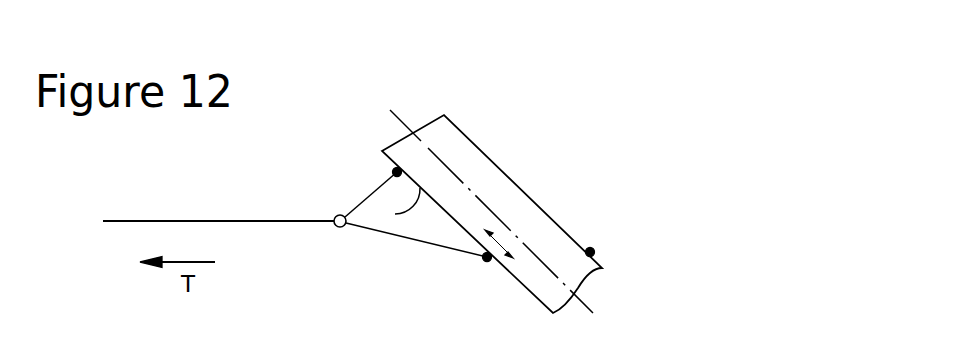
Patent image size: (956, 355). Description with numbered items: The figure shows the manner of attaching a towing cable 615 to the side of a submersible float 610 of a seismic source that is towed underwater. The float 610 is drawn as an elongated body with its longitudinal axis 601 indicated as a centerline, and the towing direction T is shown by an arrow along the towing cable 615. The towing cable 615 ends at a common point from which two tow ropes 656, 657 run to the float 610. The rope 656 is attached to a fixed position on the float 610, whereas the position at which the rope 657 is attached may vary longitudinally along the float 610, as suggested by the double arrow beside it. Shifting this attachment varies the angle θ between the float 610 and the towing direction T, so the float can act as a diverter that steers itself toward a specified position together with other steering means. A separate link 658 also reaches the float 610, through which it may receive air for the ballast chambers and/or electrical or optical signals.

The longitudinal axis 601 is at (402, 120).
The submersible float 610 is at (590, 252).
The towing cable 615 is at (153, 221).
The tow rope 656 is at (367, 186).
The tow rope 657 is at (429, 267).
The separate link 658 is at (346, 221).